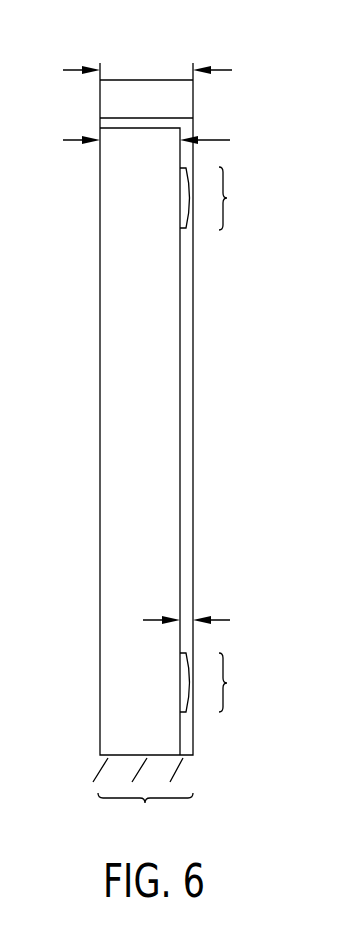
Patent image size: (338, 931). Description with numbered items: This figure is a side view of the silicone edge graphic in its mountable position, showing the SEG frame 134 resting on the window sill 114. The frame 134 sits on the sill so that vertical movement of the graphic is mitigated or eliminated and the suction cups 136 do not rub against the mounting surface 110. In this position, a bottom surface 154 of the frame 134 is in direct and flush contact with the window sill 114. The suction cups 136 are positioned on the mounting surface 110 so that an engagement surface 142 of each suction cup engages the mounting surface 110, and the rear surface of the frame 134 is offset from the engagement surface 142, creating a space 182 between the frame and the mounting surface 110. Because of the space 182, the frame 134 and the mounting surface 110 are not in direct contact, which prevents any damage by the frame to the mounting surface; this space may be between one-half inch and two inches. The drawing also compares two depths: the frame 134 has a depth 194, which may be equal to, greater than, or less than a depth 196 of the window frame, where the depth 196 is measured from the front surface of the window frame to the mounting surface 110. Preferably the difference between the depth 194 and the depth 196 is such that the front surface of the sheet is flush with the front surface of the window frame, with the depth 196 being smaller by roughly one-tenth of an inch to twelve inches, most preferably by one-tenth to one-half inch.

The mounting surface 110 is at (193, 362).
The window sill 114 is at (145, 819).
The SEG frame 134 is at (167, 428).
The suction cup 136 is at (188, 210).
The engagement surface 142 is at (242, 439).
The bottom surface 154 is at (140, 768).
The space 182 is at (218, 618).
The depth of the frame 194 is at (217, 138).
The depth of the window frame 196 is at (222, 70).